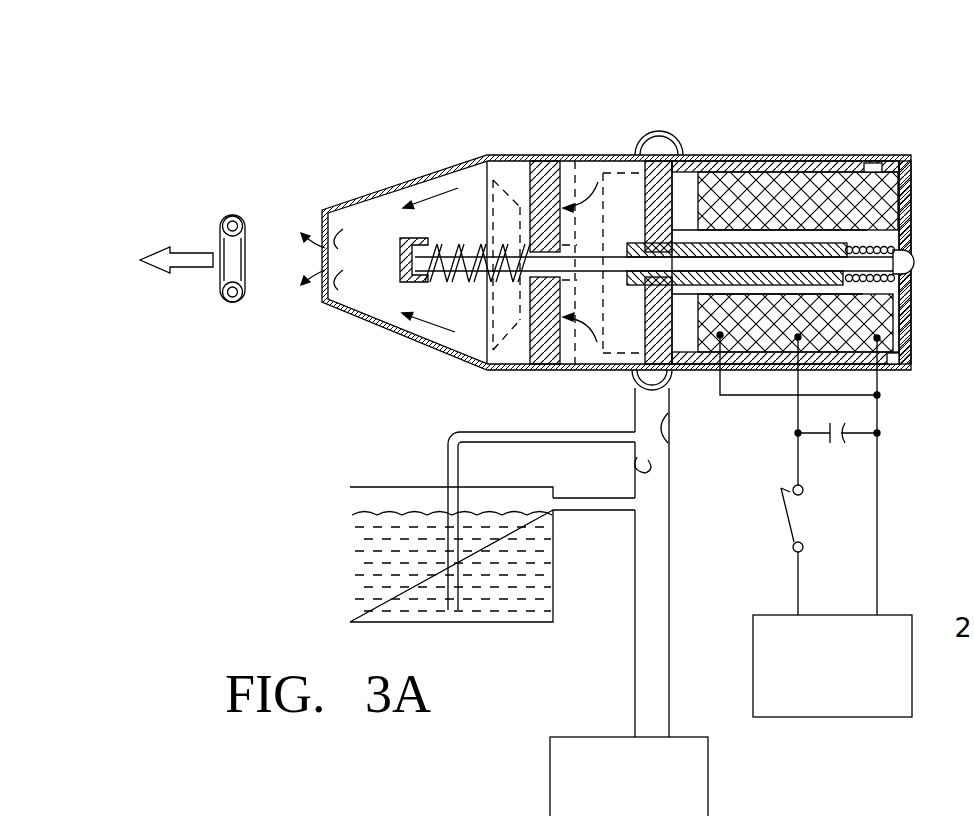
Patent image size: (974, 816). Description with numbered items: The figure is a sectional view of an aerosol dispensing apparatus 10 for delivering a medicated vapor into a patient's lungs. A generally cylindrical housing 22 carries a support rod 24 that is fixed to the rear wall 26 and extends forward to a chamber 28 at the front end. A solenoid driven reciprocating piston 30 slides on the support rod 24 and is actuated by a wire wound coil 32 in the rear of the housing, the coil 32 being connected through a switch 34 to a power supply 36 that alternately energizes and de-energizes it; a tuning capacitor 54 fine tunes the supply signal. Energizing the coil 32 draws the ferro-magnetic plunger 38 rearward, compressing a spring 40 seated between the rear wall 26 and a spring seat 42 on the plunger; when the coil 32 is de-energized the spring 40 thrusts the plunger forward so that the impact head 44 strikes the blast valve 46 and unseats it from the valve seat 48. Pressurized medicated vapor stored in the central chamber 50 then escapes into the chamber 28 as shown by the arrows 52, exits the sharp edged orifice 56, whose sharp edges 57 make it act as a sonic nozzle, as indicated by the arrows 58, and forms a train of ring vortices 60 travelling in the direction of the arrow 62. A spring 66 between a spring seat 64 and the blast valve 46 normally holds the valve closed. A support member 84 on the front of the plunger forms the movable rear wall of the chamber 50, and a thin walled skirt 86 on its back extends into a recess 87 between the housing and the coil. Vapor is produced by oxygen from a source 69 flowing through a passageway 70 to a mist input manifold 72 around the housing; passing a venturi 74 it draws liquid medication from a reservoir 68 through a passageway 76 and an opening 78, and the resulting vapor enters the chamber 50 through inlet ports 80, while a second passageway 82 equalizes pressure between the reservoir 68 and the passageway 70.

The aerosol dispensing apparatus 10 is at (298, 108).
The housing 22 is at (370, 318).
The support rod 24 is at (443, 272).
The rear wall 26 is at (910, 187).
The chamber 28 is at (381, 301).
The reciprocating piston 30 is at (650, 338).
The wire wound coil 32 is at (825, 172).
The switch 34 is at (787, 523).
The power supply 36 is at (908, 615).
The plunger 38 is at (693, 175).
The spring 40 is at (914, 262).
The spring seat 42 is at (866, 243).
The impact head 44 is at (627, 247).
The blast valve 46 is at (560, 205).
The valve seat 48 is at (530, 345).
The chamber 50 is at (631, 321).
The arrows 52 is at (436, 195).
The tuning capacitor 54 is at (833, 446).
The sharp edged orifice 56 is at (330, 248).
The sharp edges 57 is at (322, 228).
The arrows 58 is at (312, 272).
The train of ring vortices 60 is at (229, 302).
The arrow 62 is at (185, 252).
The spring seat 64 is at (400, 240).
The spring 66 is at (452, 246).
The reservoir 68 is at (350, 535).
The source 69 is at (576, 737).
The passageway 70 is at (670, 590).
The mist input manifold 72 is at (660, 130).
The venturi 74 is at (640, 465).
The passageway 76 is at (448, 452).
The opening 78 is at (643, 438).
The inlet ports 80 is at (660, 158).
The second passageway 82 is at (583, 511).
The support member 84 is at (650, 183).
The skirt 86 is at (762, 165).
The recess 87 is at (880, 165).